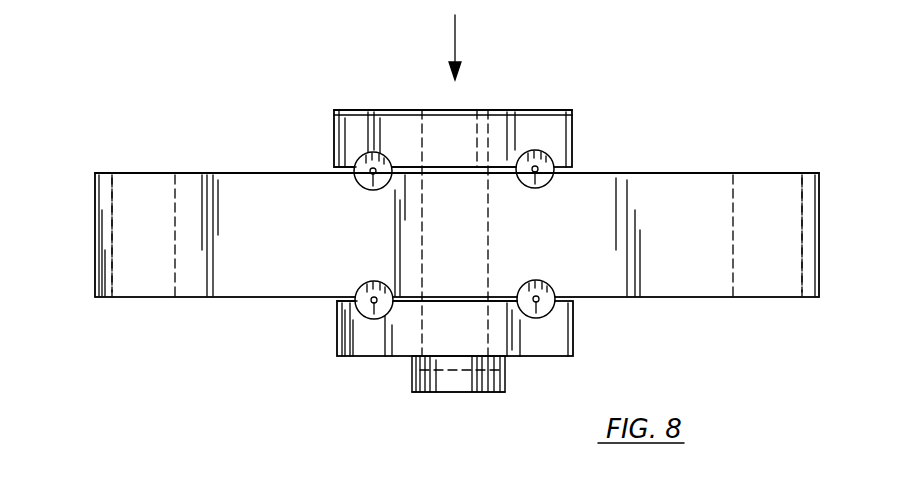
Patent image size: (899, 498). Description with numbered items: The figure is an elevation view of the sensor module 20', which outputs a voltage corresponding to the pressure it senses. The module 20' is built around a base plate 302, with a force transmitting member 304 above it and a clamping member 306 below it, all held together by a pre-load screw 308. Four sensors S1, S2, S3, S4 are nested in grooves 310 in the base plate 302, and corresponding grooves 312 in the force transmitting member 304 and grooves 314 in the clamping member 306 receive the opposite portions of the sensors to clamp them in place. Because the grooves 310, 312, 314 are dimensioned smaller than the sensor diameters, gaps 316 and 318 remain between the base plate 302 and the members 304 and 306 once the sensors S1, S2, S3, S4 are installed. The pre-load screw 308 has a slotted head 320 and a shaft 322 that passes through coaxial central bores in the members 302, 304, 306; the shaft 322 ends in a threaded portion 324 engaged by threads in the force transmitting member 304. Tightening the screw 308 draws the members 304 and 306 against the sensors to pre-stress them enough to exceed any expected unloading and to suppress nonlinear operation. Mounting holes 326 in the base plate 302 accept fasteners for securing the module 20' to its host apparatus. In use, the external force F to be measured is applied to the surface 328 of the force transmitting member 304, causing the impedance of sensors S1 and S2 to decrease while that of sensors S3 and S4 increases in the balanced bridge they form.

The sensor module 20' is at (457, 118).
The base plate 302 is at (708, 178).
The force transmitting member 304 is at (556, 110).
The clamping member 306 is at (373, 358).
The pre-load screw 308 is at (486, 394).
The grooves 310 is at (377, 281).
The grooves 312 is at (520, 152).
The grooves 314 is at (522, 312).
The gap 316 is at (338, 169).
The gap 318 is at (338, 302).
The slotted head 320 is at (440, 394).
The shaft 322 is at (462, 246).
The threaded portion 324 is at (493, 117).
The mounting holes 326 is at (151, 192).
The surface 328 is at (397, 110).
The sensor S1 is at (360, 158).
The sensor S2 is at (548, 157).
The sensor S3 is at (370, 312).
The sensor S4 is at (548, 308).
The force F is at (458, 47).